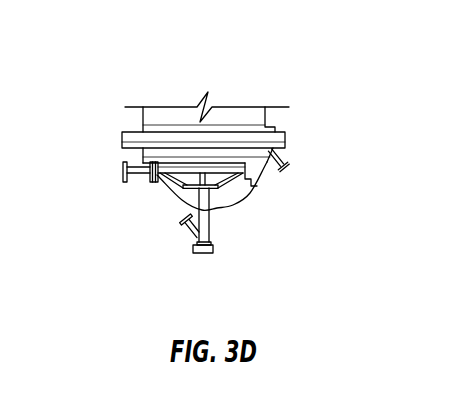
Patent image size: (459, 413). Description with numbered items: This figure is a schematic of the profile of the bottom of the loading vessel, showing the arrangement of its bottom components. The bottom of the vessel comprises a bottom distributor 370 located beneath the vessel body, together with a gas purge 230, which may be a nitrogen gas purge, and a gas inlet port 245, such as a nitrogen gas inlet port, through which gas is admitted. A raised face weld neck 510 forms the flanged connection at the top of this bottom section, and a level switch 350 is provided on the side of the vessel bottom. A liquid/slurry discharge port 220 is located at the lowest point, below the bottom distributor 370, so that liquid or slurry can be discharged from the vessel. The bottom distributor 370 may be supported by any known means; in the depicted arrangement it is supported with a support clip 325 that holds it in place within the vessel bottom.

The raised face weld neck 510 is at (285, 132).
The level switch 350 is at (285, 160).
The gas inlet port 245 is at (123, 171).
The support clip 325 is at (248, 190).
The bottom distributor 370 is at (211, 189).
The liquid/slurry discharge port 220 is at (203, 253).
The gas purge 230 is at (184, 228).